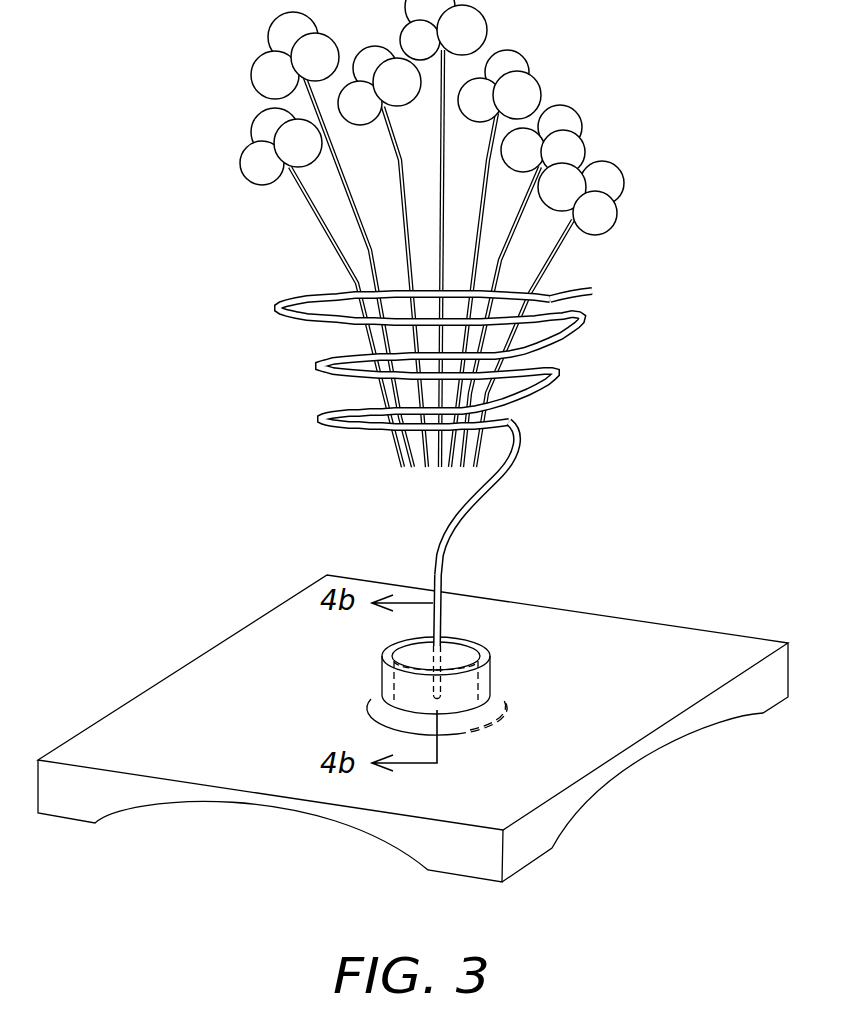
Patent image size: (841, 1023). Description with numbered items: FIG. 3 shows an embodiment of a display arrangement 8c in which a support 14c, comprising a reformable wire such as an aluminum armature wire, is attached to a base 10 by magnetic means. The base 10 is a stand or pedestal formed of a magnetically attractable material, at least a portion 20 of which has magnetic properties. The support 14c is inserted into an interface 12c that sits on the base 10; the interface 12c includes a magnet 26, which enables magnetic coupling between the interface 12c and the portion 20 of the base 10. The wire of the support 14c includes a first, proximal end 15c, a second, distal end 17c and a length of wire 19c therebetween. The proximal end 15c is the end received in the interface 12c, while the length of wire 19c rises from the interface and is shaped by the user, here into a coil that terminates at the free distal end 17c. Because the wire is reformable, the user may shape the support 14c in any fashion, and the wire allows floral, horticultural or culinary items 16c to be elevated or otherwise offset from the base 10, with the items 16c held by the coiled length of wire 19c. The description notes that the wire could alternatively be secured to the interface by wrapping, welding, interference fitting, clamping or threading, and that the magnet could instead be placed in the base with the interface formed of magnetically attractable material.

The floral display arrangement 8c is at (379, 349).
The base 10 is at (413, 718).
The interface 12c is at (385, 669).
The support 14c is at (524, 498).
The first, proximal end 15c is at (389, 616).
The flower stems with blooms 16c is at (400, 233).
The second, distal end 17c is at (620, 286).
The length of wire 19c is at (407, 360).
The portion of the base 20 is at (399, 721).
The magnet 26 is at (536, 694).